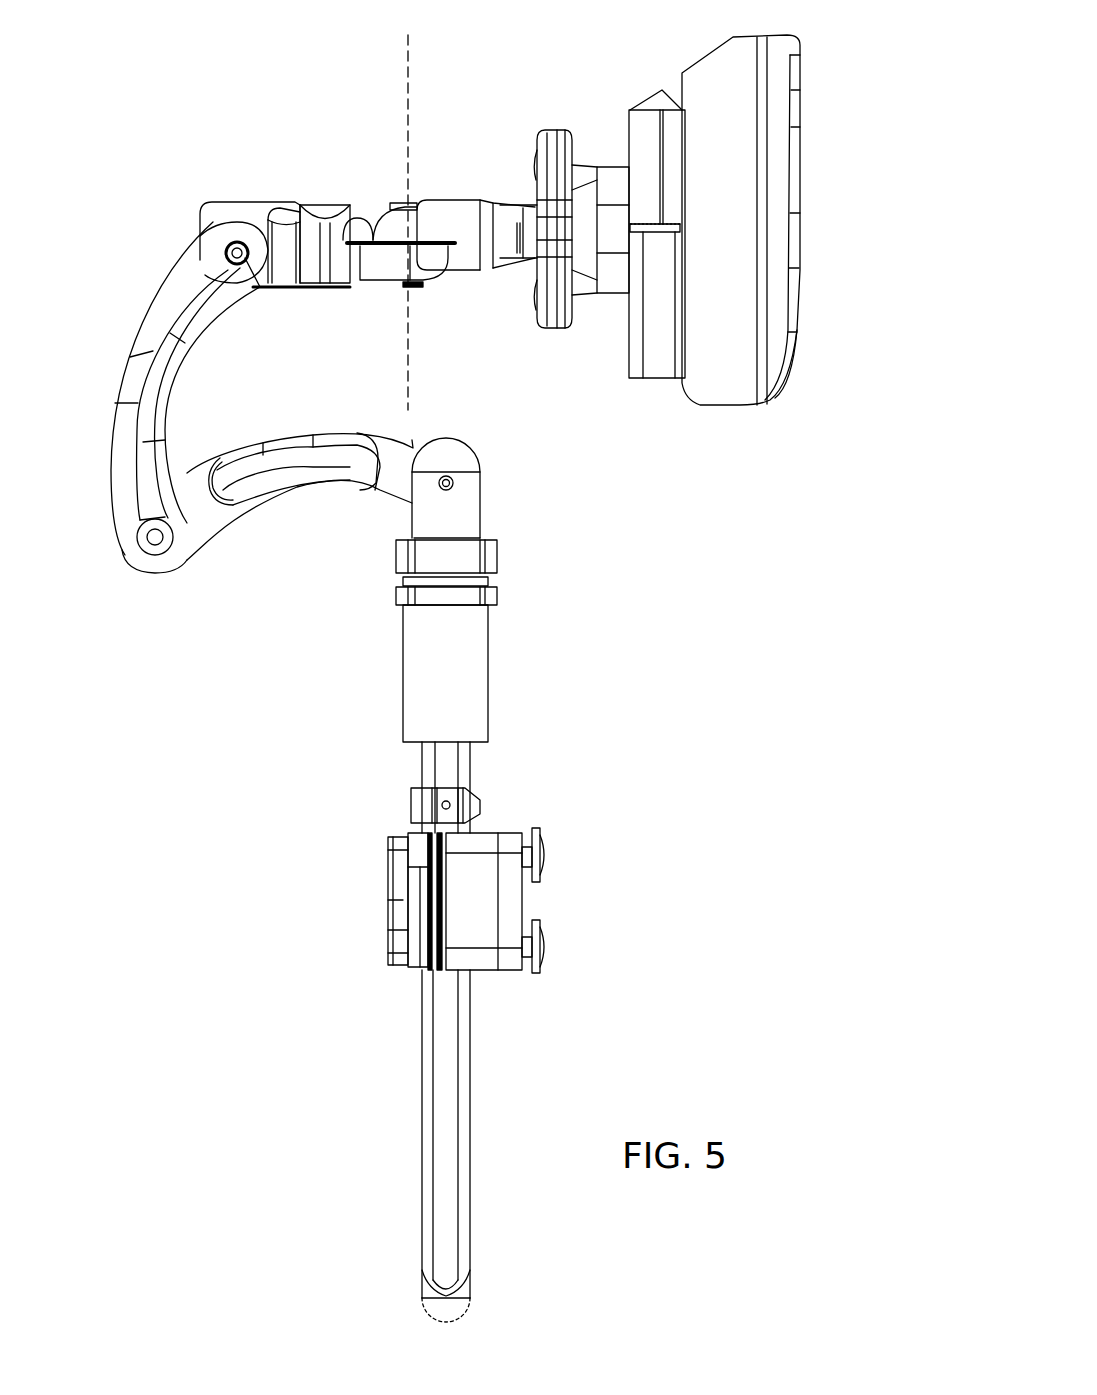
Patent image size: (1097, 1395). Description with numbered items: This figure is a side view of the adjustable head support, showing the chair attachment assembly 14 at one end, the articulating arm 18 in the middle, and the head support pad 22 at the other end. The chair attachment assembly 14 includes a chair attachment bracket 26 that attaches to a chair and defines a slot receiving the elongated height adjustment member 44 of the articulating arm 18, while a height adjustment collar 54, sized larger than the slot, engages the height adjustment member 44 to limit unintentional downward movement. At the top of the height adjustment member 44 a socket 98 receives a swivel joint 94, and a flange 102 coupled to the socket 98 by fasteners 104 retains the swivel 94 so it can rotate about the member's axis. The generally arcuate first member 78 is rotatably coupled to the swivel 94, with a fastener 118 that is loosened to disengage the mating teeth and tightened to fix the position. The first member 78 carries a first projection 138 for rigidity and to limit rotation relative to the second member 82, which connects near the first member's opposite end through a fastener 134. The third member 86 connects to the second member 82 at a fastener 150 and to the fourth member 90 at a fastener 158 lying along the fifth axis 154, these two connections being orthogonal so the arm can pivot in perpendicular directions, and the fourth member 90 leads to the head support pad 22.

The chair attachment assembly 14 is at (358, 905).
The articulating arm 18 is at (260, 643).
The head support pad 22 is at (822, 162).
The chair attachment bracket 26 is at (480, 958).
The height adjustment member 44 is at (420, 1066).
The height adjustment collar 54 is at (480, 800).
The first member 78 is at (400, 437).
The second member 82 is at (130, 358).
The third member 86 is at (280, 200).
The fourth member 90 is at (472, 198).
The swivel joint 94 is at (480, 508).
The socket 98 is at (488, 597).
The flange 102 is at (498, 557).
The fastener 104 is at (448, 582).
The fastener 118 is at (451, 482).
The fastener 134 is at (138, 562).
The first projection 138 is at (250, 495).
The fastener 150 is at (232, 250).
The fifth axis 154 is at (410, 83).
The fastener 158 is at (400, 202).